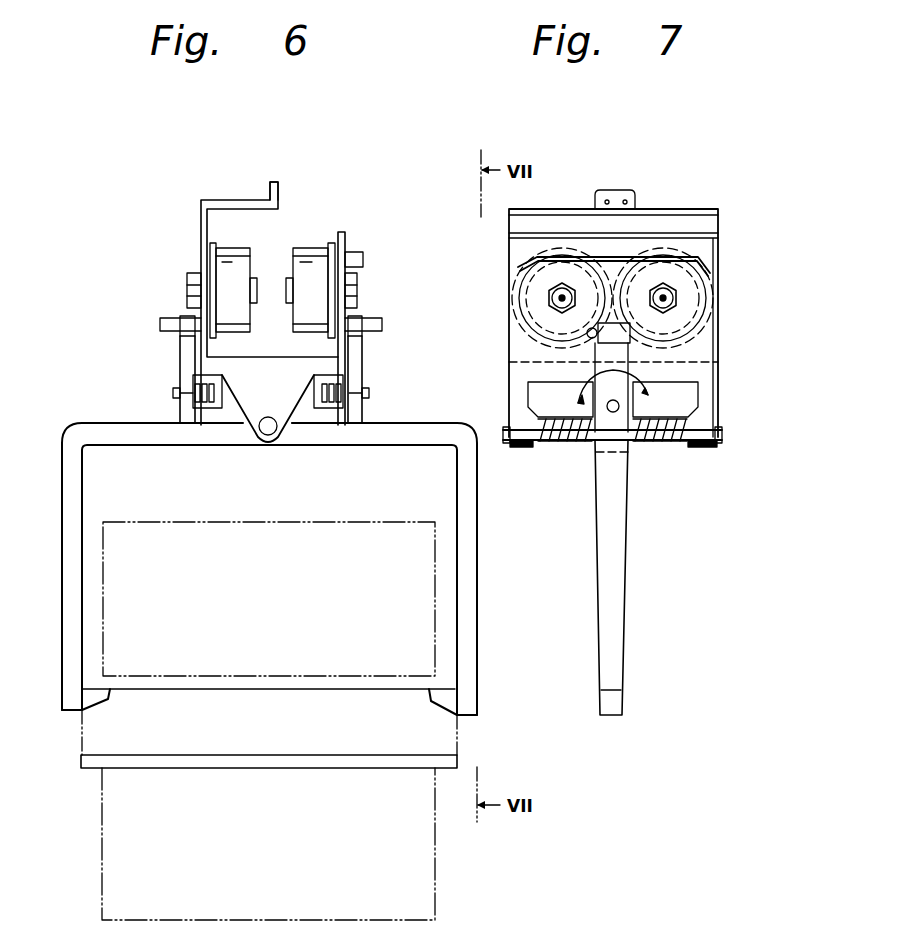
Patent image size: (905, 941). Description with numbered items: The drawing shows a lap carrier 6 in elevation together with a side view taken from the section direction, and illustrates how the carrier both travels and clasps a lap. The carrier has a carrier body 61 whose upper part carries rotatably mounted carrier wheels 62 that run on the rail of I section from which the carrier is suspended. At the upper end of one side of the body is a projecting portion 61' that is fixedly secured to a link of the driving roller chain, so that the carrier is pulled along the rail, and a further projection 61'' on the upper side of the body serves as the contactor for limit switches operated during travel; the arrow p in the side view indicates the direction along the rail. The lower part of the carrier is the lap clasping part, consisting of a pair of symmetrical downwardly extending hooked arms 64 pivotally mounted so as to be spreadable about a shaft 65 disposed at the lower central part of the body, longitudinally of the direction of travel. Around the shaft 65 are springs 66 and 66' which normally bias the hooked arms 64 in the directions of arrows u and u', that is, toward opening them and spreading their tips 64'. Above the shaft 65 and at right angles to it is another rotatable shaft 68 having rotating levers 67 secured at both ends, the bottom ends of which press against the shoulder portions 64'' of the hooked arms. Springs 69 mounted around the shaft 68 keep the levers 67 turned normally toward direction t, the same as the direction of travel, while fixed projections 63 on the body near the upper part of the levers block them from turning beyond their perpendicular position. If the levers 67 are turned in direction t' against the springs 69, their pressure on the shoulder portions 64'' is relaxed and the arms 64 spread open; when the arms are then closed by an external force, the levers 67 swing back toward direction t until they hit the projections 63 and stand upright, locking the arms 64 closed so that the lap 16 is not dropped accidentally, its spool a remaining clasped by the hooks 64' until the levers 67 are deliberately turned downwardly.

In FIG. 6, the lap carrier 6 is at (242, 303).
In FIG. 7, the lap carrier 6 is at (609, 310).
In FIG. 6, the carrier body 61 is at (269, 303).
In FIG. 7, the carrier body 61 is at (592, 323).
In FIG. 6, the projecting portion 61' is at (294, 176).
In FIG. 7, the projecting portion 61' is at (639, 197).
In FIG. 6, the projection 61'' is at (366, 316).
In FIG. 7, the projection 61'' is at (587, 259).
In FIG. 6, the carrier wheels 62 is at (300, 246).
In FIG. 6, the fixed projections 63 is at (360, 326).
In FIG. 7, the fixed projections 63 is at (588, 331).
In FIG. 6, the hooked arms 64 is at (292, 569).
In FIG. 7, the hooked arms 64 is at (629, 577).
In FIG. 6, the tips of the hooked arms 64' is at (269, 706).
In FIG. 6, the shoulder portions 64'' is at (346, 456).
In FIG. 6, the shaft 65 is at (268, 436).
In FIG. 7, the shaft 65 is at (723, 438).
In FIG. 7, the spring 66 is at (560, 437).
In FIG. 7, the spring 66' is at (669, 440).
In FIG. 6, the rotating levers 67 is at (362, 352).
In FIG. 7, the rotating levers 67 is at (612, 363).
In FIG. 6, the rotatable shaft 68 is at (369, 394).
In FIG. 7, the rotatable shaft 68 is at (617, 411).
In FIG. 6, the spring 69 is at (204, 409).
In FIG. 6, the lap 16 is at (428, 915).
In FIG. 6, the spool a is at (93, 760).
In FIG. 6, the direction u is at (424, 411).
In FIG. 6, the direction u' is at (115, 431).
In FIG. 7, the direction p is at (660, 173).
In FIG. 7, the direction t is at (566, 406).
In FIG. 7, the direction t' is at (658, 406).